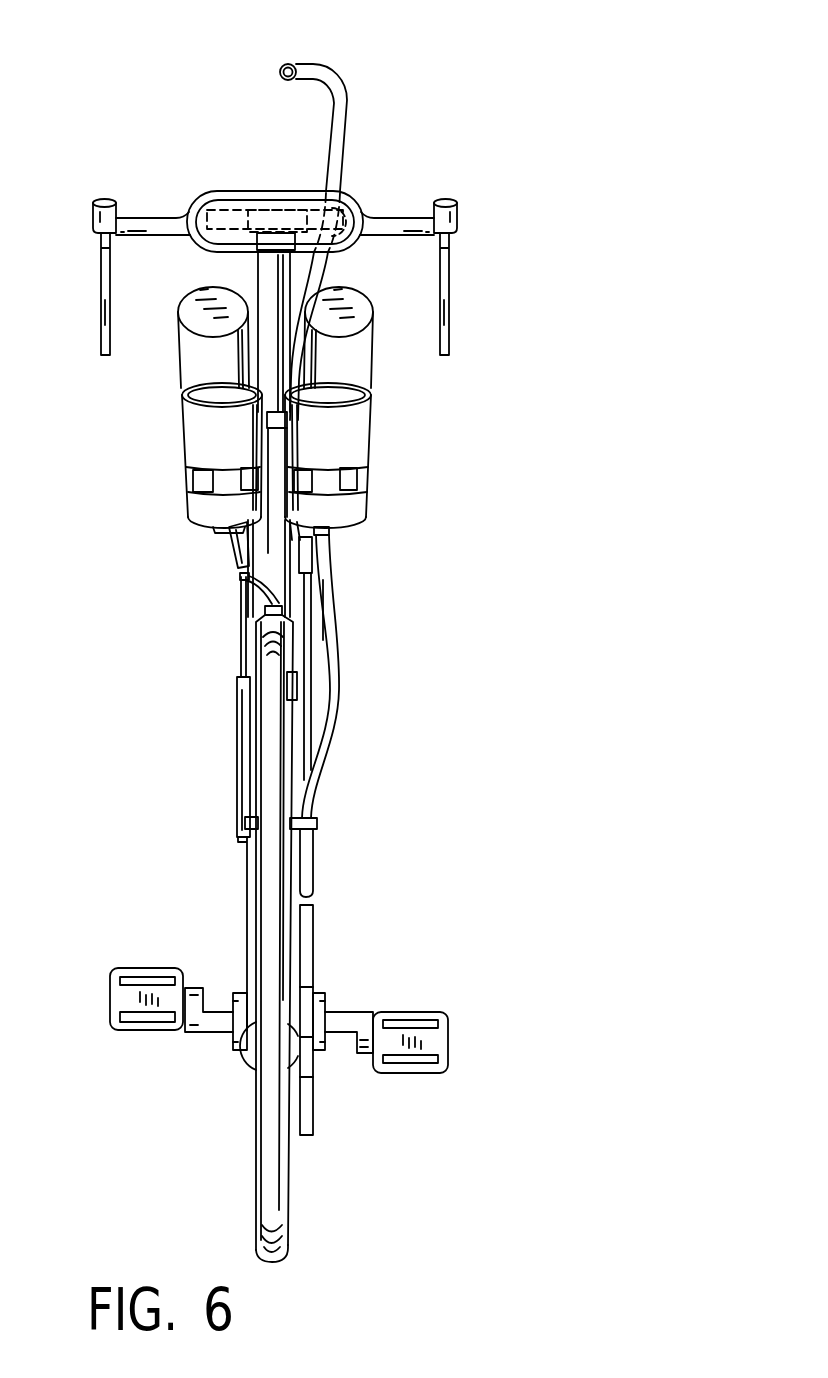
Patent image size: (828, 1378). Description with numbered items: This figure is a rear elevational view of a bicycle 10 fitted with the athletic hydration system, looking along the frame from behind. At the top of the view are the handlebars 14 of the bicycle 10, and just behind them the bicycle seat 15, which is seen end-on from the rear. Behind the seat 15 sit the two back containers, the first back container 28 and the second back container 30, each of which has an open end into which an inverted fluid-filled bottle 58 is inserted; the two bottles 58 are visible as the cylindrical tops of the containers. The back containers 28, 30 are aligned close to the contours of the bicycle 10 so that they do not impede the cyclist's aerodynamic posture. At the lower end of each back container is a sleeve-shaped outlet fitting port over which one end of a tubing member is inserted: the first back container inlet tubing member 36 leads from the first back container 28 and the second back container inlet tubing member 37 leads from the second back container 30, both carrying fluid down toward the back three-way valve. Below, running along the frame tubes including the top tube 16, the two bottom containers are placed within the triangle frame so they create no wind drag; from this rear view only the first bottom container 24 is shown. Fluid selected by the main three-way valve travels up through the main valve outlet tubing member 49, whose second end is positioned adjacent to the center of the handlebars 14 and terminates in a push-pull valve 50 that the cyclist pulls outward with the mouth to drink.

The bicycle 10 is at (574, 144).
The handlebars 14 is at (457, 217).
The bicycle seat 15 is at (235, 193).
The top tube 16 is at (278, 553).
The first bottom container 24 is at (233, 752).
The first back container 28 is at (197, 438).
The second back container 30 is at (358, 437).
The first back container inlet tubing member 36 is at (222, 542).
The second back container inlet tubing member 37 is at (332, 723).
The main valve outlet tubing member 49 is at (345, 133).
The push-pull valve 50 is at (280, 72).
The inverted fluid-filled bottle 58 is at (195, 358).